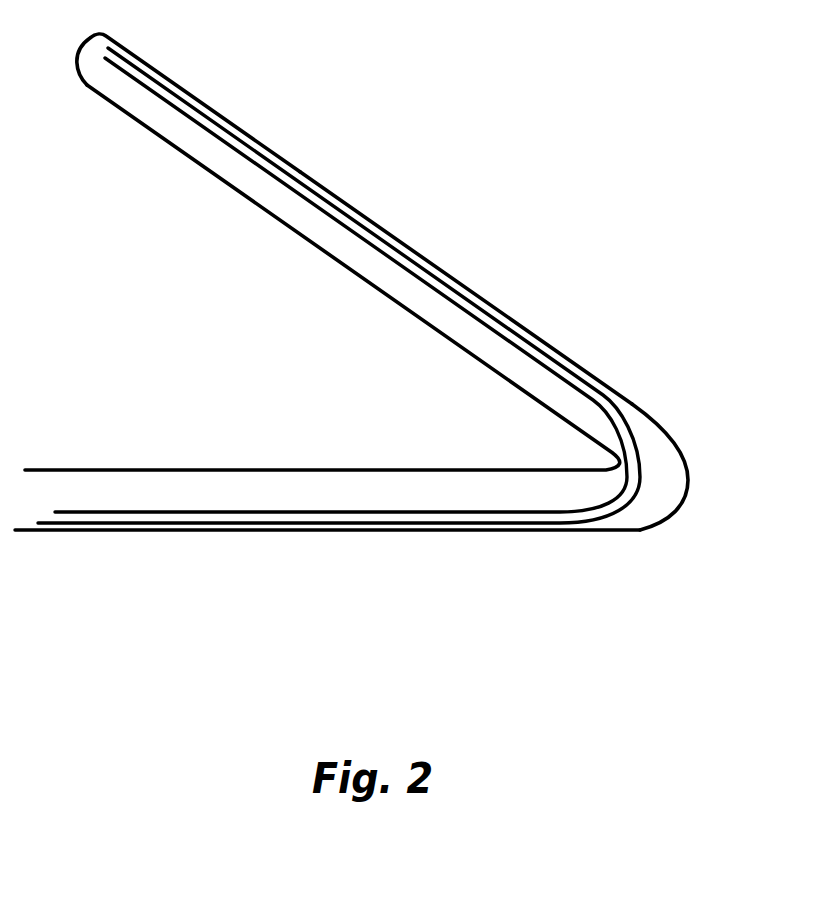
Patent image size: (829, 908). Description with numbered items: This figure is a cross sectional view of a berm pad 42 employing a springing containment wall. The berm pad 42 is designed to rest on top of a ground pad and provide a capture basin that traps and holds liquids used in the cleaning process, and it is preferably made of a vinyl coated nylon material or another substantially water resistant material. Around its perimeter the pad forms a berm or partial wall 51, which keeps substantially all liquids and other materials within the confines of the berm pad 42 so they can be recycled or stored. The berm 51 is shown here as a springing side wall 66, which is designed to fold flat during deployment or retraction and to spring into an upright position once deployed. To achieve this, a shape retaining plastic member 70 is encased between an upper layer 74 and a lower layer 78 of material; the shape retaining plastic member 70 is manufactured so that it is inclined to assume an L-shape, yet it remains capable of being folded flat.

The berm pad 42 is at (668, 523).
The berm 51 is at (498, 308).
The springing side wall 66 is at (293, 167).
The shape retaining plastic member 70 is at (627, 433).
The upper layer 74 is at (243, 468).
The lower layer 78 is at (183, 533).